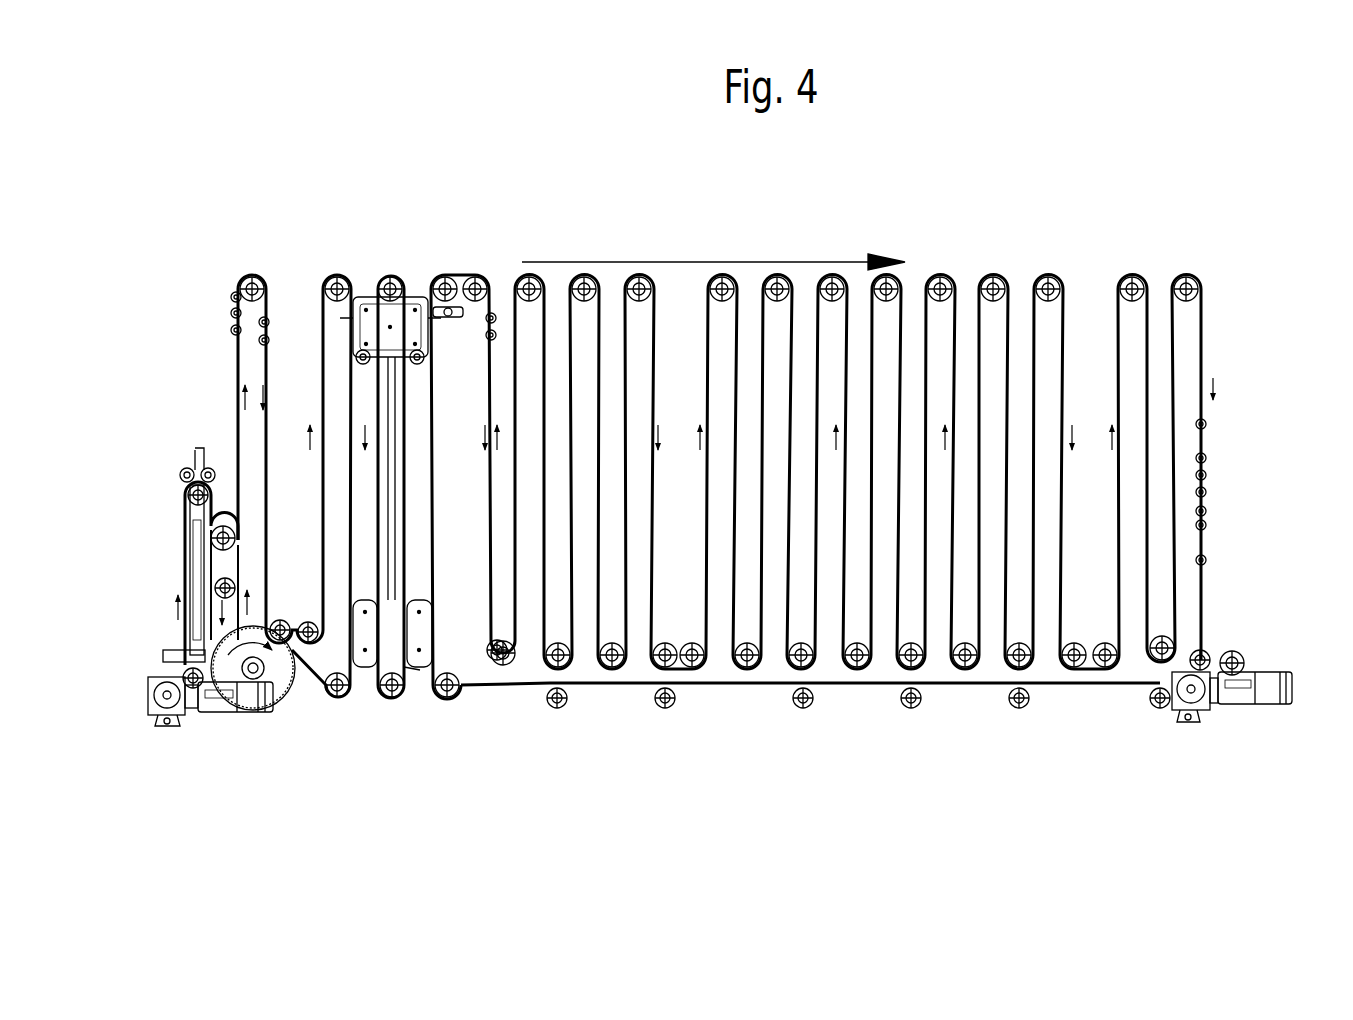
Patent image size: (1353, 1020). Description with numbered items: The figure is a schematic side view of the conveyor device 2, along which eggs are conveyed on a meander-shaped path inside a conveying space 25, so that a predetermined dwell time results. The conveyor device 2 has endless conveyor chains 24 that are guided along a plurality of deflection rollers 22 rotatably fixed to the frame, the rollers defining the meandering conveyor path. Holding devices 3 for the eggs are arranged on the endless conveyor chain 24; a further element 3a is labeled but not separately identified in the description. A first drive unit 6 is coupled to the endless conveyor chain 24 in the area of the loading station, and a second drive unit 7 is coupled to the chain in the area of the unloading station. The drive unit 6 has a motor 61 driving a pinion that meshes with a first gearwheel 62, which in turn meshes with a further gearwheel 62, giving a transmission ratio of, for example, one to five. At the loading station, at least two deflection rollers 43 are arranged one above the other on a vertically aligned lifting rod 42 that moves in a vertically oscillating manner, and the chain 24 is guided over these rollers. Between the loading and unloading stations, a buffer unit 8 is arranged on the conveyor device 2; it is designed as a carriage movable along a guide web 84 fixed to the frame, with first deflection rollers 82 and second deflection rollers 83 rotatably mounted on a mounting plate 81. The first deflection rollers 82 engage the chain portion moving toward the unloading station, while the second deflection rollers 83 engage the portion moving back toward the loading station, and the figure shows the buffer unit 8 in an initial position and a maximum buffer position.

The conveyor device 2 is at (722, 443).
The holding device 3 is at (1200, 422).
The return strand 3a is at (236, 327).
The first drive unit 6 is at (227, 716).
The second drive unit 7 is at (1285, 720).
The buffer unit 8 is at (395, 456).
The deflection roller 22 is at (641, 276).
The endless conveyor chain 24 is at (653, 328).
The conveying space 25 is at (415, 668).
The lifting rod 42 is at (195, 450).
The deflection roller 43 is at (190, 498).
The motor 61 is at (247, 697).
The gearwheel 62 is at (277, 692).
The mounting plate 81 is at (398, 315).
The first deflection roller 82 is at (370, 283).
The second deflection roller 83 is at (350, 350).
The guide web 84 is at (392, 445).